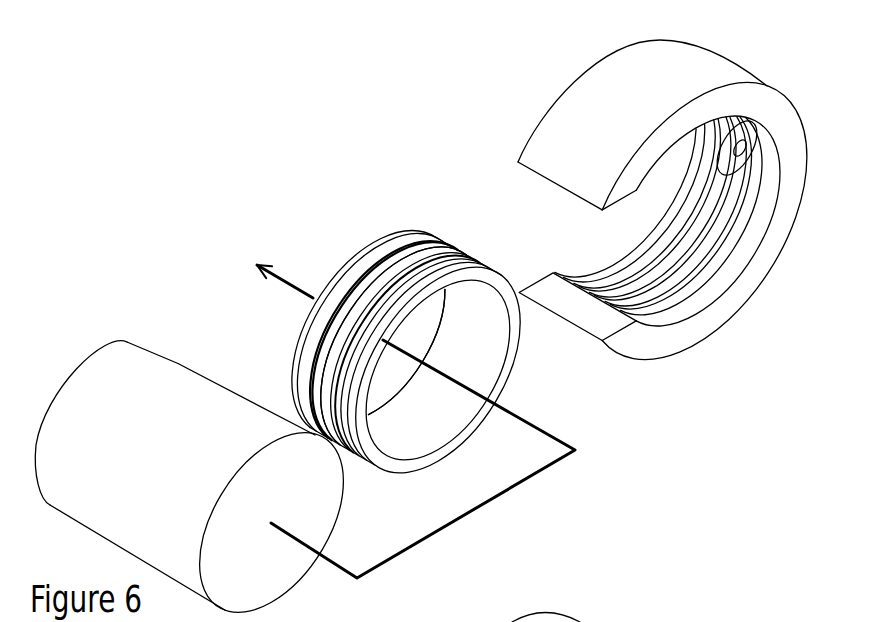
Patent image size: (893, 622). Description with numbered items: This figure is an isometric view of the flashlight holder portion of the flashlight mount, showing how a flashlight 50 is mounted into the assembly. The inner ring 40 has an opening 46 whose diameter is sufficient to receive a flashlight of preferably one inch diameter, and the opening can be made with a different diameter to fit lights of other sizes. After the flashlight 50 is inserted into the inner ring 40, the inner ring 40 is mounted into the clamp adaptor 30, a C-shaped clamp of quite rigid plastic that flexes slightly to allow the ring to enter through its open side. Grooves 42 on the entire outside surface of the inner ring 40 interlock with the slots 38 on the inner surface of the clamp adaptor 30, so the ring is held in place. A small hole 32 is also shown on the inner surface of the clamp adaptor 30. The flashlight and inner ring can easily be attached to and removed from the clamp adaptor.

The clamp adaptor 30 is at (597, 73).
The hole 32 is at (748, 153).
The slots 38 is at (680, 283).
The inner ring 40 is at (327, 278).
The grooves 42 is at (380, 247).
The opening 46 is at (397, 373).
The flashlight 50 is at (127, 352).